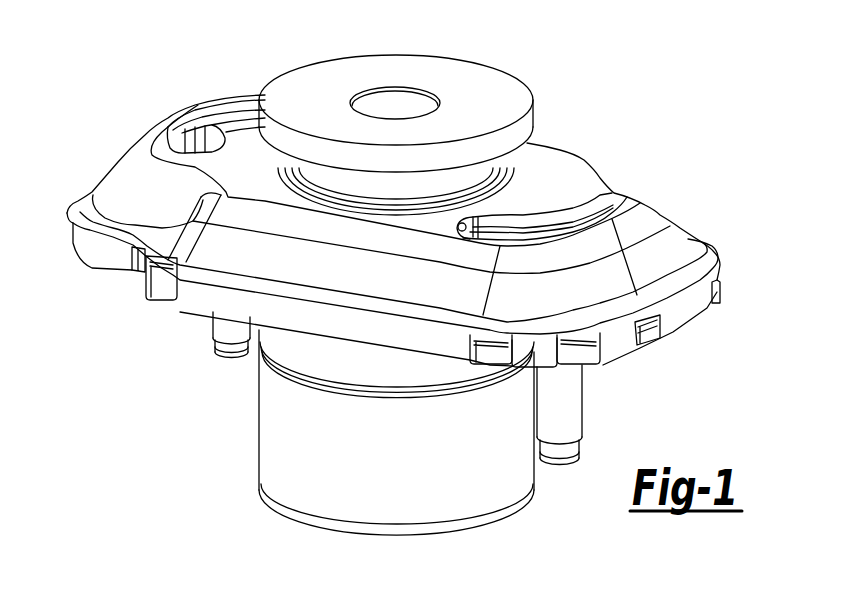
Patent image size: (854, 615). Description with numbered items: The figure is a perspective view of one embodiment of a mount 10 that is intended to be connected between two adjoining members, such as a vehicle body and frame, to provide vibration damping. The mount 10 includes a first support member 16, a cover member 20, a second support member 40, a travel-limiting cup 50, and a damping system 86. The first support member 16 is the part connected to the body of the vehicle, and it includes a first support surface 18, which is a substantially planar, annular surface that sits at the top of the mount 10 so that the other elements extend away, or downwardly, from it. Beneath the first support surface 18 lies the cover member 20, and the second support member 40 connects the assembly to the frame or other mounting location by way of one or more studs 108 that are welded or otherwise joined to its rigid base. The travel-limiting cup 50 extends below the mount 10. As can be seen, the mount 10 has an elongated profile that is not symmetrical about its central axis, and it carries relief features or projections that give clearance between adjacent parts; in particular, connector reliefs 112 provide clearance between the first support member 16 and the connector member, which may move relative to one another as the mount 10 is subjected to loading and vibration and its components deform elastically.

The mount 10 is at (110, 70).
The first support member 16 is at (518, 130).
The first support surface 18 is at (410, 62).
The cover member 20 is at (640, 215).
The second support member 40 is at (645, 341).
The travel-limiting cup 50 is at (280, 416).
The damping system 86 is at (742, 250).
The studs 108 is at (219, 327).
The connector reliefs 112 is at (208, 117).